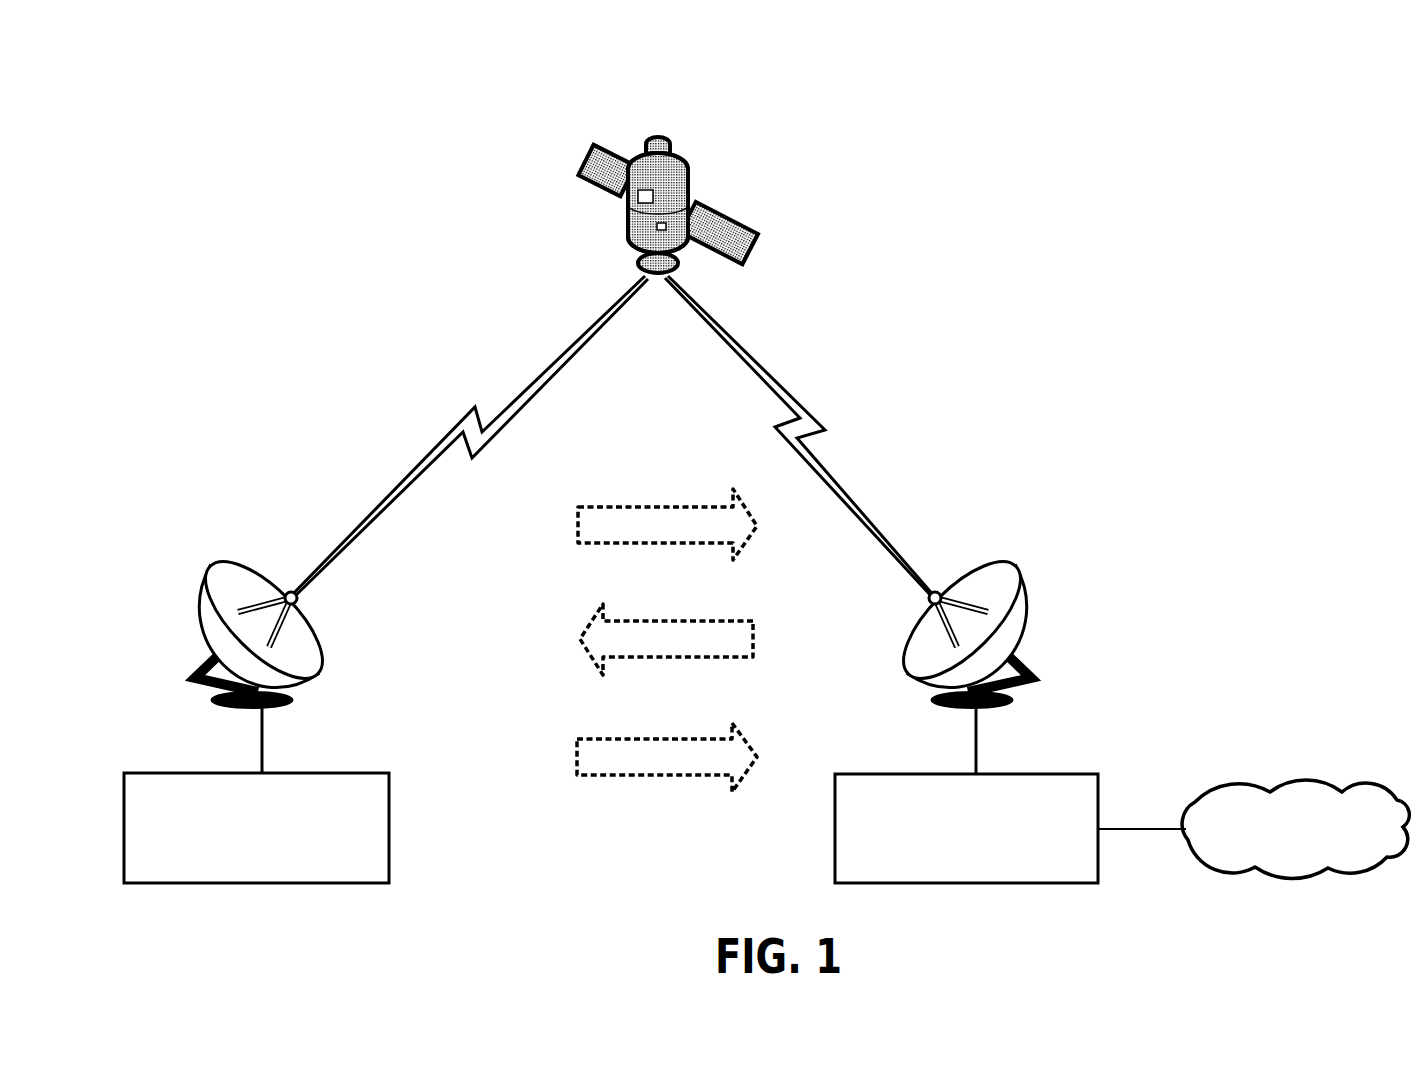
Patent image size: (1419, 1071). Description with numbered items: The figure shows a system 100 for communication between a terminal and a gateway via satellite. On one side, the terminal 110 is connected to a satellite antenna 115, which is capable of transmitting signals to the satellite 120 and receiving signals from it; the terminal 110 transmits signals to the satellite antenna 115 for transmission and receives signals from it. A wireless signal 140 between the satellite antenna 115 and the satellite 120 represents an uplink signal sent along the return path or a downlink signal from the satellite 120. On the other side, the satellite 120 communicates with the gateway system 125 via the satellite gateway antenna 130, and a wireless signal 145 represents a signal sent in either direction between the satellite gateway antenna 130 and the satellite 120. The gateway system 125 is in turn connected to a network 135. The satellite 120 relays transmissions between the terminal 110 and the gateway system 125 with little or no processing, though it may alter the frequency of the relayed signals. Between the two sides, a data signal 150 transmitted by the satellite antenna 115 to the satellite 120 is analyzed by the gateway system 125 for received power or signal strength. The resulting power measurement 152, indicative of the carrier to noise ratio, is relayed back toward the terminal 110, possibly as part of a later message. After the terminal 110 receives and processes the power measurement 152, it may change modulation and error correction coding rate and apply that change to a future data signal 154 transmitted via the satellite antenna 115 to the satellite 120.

The system 100 is at (150, 110).
The terminal 110 is at (359, 773).
The satellite antenna 115 is at (245, 582).
The satellite 120 is at (715, 205).
The gateway system 125 is at (1062, 774).
The satellite gateway antenna 130 is at (1027, 574).
The network 135 is at (1340, 790).
The wireless signal 140 is at (427, 457).
The wireless signal 145 is at (824, 429).
The data signal 150 is at (684, 507).
The power measurement 152 is at (684, 621).
The data signal 154 is at (683, 739).